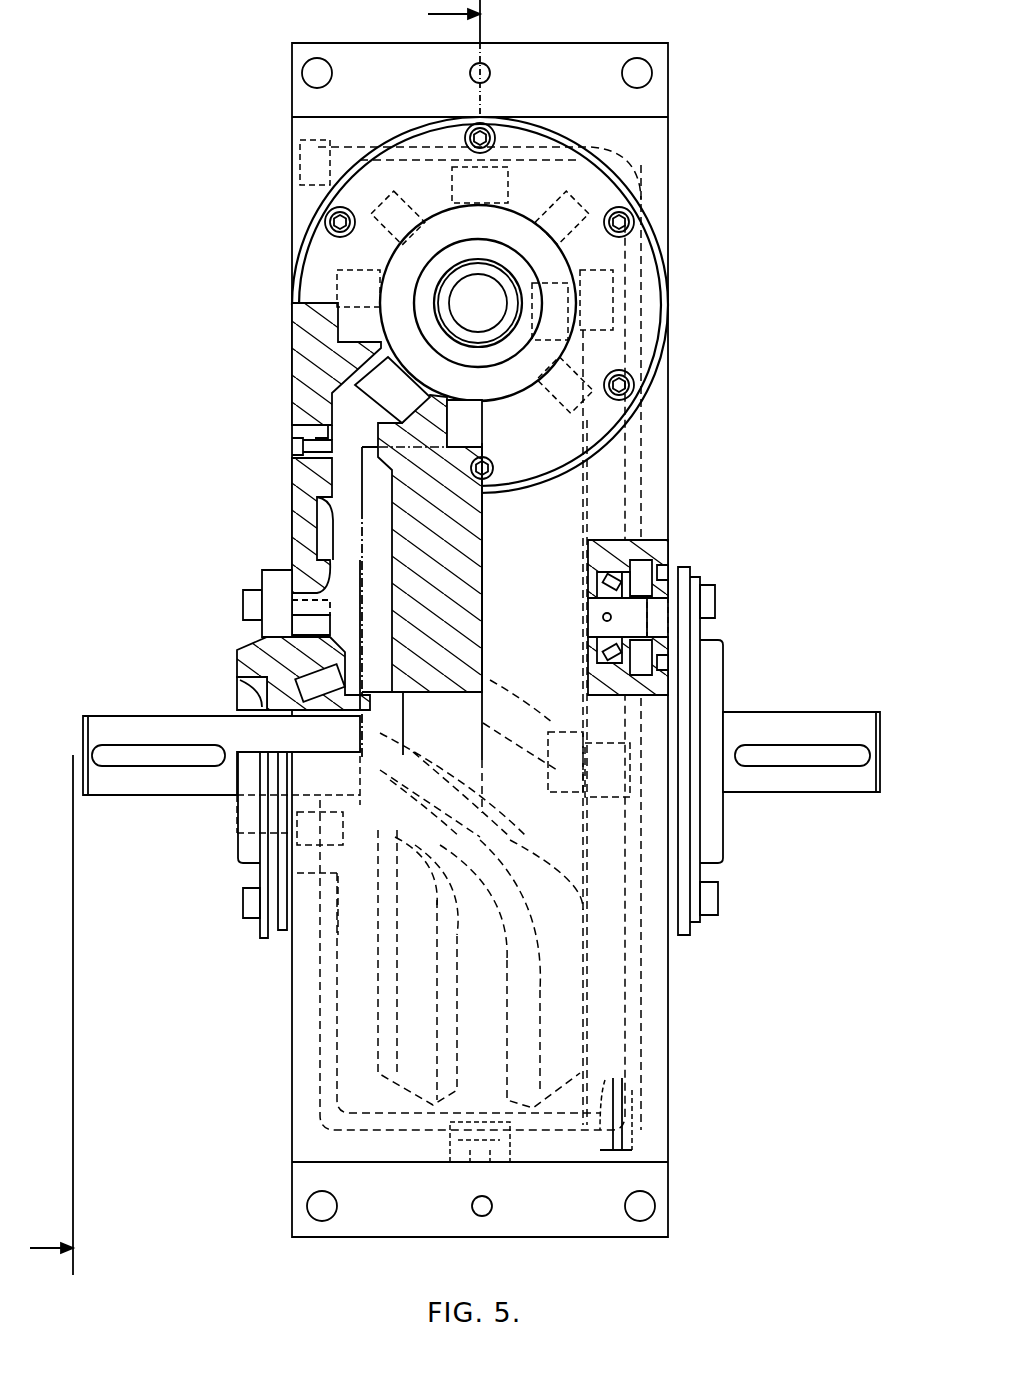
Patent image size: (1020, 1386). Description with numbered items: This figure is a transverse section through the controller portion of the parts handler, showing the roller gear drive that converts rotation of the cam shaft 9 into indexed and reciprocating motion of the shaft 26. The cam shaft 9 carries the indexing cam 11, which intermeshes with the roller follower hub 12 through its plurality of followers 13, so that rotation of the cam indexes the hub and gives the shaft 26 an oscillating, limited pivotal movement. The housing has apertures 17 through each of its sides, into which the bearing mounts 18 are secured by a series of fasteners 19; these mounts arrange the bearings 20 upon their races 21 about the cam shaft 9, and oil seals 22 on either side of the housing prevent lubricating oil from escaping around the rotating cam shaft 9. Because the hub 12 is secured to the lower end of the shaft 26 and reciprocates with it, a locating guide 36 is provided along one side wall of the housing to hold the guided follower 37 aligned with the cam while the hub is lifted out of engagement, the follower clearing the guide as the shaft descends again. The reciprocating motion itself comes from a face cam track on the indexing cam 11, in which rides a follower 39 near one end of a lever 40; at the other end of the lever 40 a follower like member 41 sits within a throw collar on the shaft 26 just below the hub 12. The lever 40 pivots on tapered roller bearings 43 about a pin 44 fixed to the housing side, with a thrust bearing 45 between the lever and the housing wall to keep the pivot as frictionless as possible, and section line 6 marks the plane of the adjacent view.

The section line 6- 6 is at (255, 637).
The cam shaft 9 is at (148, 795).
The indexing cam 11 is at (562, 1003).
The roller follower hub 12 is at (568, 350).
The followers 13 is at (590, 222).
The apertures 17 is at (327, 636).
The bearing mounts 18 is at (723, 652).
The fasteners 19 is at (718, 600).
The bearings 20 is at (244, 650).
The races 21 is at (290, 700).
The oil seals 22 is at (240, 690).
The shaft 26 is at (451, 292).
The locating guide 36 is at (300, 318).
The guided follower 37 is at (345, 276).
The follower 39 is at (572, 795).
The lever 40 is at (625, 478).
The follower like member 41 is at (550, 342).
The tapered roller bearings 43 is at (625, 550).
The pin 44 is at (605, 613).
The thrust bearing 45 is at (632, 565).